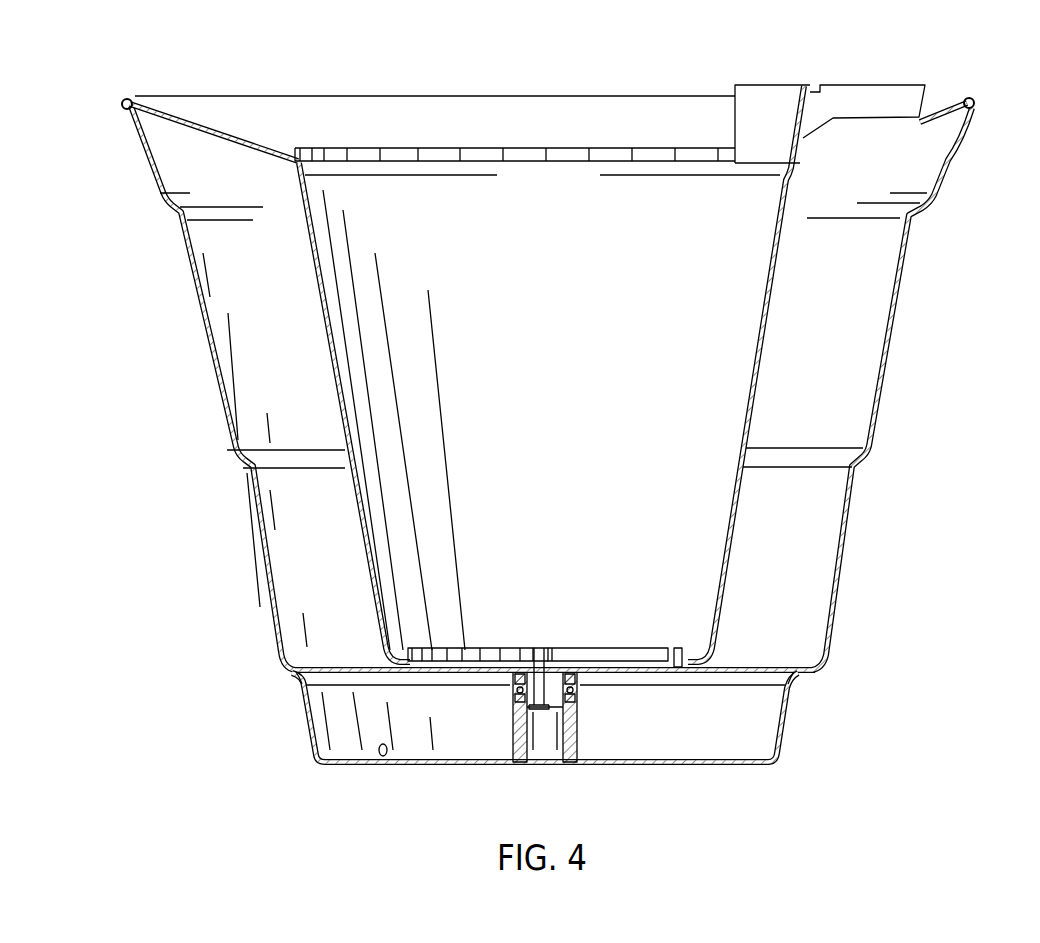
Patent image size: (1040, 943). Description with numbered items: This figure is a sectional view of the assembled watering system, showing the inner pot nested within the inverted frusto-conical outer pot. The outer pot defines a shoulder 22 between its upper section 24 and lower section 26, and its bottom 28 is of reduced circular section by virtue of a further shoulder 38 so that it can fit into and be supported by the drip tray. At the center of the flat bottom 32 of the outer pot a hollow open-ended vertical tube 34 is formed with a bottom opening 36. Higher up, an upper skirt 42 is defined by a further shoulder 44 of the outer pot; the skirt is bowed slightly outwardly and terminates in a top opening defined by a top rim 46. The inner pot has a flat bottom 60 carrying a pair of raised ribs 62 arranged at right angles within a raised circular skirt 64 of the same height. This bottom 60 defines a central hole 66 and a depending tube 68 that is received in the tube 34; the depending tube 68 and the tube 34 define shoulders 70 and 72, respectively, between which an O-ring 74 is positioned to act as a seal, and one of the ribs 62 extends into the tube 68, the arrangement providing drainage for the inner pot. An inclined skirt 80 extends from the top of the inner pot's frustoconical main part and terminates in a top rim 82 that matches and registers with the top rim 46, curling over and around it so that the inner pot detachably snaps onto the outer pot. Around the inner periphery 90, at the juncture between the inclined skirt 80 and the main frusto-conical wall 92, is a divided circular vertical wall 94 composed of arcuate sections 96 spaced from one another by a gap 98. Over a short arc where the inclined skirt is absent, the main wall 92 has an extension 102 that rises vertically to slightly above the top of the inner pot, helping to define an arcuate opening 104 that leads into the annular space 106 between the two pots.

The shoulder 22 is at (782, 452).
The upper section 24 is at (898, 305).
The lower section 26 is at (843, 560).
The bottom 28 is at (790, 725).
The flat bottom 32 is at (432, 675).
The hollow open-ended vertical tube 34 is at (578, 740).
The bottom opening 36 is at (558, 764).
The shoulder 38 is at (805, 682).
The upper skirt 42 is at (955, 160).
The further shoulder 44 is at (925, 208).
The top rim 46 is at (957, 120).
The flat bottom 60 is at (665, 685).
The raised ribs 62 is at (438, 652).
The raised circular skirt 64 is at (679, 650).
The central hole 66 is at (575, 652).
The depending tube 68 is at (530, 650).
The shoulder 70 is at (515, 682).
The shoulder 72 is at (518, 702).
The O-ring 74 is at (575, 690).
The inclined skirt 80 is at (210, 122).
The top rim 82 is at (125, 99).
The inner periphery 90 is at (297, 165).
The main frusto-conical wall 92 is at (323, 258).
The divided circular vertical wall 94 is at (290, 150).
The arcuate sections 96 is at (340, 150).
The gap 98 is at (385, 150).
The extension 102 is at (810, 150).
The arcuate opening 104 is at (890, 85).
The annular space 106 is at (850, 311).